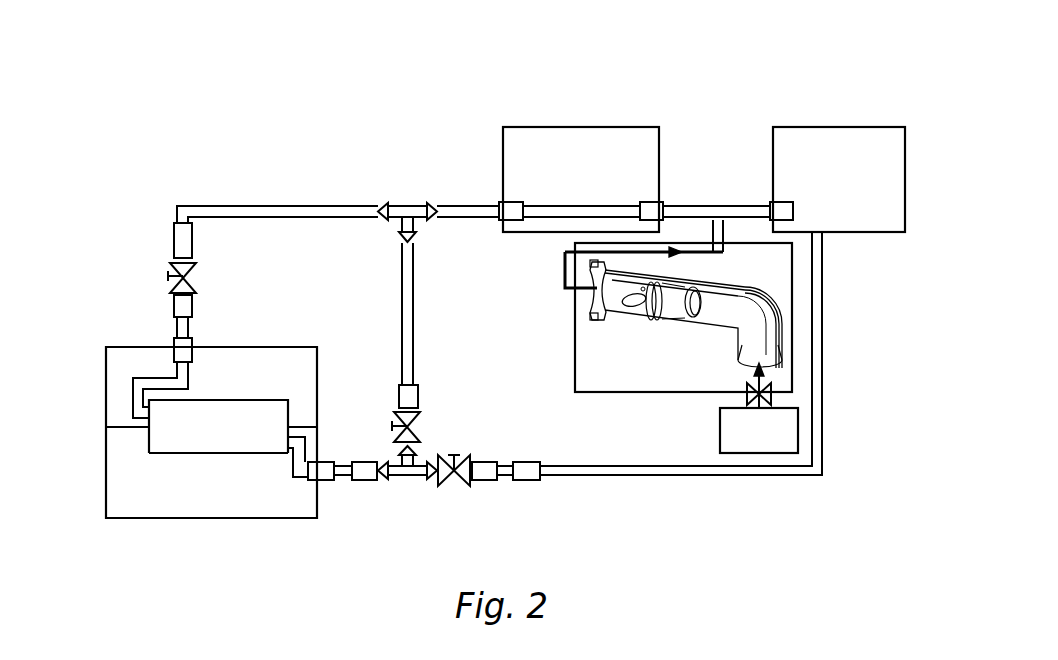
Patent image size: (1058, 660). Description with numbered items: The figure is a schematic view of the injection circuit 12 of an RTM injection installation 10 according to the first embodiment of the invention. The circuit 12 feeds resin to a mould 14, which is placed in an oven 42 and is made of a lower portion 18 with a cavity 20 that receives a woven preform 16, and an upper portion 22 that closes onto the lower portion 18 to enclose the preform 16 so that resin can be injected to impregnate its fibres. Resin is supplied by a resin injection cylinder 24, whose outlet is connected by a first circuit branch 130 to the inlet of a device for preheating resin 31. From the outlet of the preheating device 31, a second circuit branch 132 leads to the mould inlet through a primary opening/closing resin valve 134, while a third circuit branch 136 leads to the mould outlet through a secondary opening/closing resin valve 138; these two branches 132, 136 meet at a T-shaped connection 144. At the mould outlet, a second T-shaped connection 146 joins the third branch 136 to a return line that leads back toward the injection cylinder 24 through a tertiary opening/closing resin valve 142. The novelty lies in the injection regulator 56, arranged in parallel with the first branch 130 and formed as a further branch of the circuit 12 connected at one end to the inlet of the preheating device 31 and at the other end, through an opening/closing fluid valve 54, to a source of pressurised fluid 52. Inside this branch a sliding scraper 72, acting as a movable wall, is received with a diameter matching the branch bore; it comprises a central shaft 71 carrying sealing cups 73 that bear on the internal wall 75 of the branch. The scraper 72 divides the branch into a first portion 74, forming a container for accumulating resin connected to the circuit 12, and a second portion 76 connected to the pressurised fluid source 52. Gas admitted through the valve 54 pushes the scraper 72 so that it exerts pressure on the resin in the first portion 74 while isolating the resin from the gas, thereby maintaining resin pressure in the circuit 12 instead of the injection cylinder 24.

The RTM injection installation 10 is at (795, 70).
The injection circuit 12 is at (282, 160).
The mould 14 is at (285, 492).
The woven preform 16 is at (170, 437).
The lower portion 18 is at (228, 502).
The cavity 20 is at (183, 455).
The upper portion 22 is at (255, 375).
The resin injection cylinder 24 is at (839, 179).
The device for preheating resin 31 is at (581, 179).
The oven 42 is at (106, 380).
The source of pressurised fluid 52 is at (759, 430).
The opening/closing fluid valve 54 is at (772, 398).
The injection regulator 56 is at (773, 292).
The central shaft 71 is at (676, 302).
The sliding scraper 72 is at (681, 329).
The sealing cups 73 is at (660, 317).
The first portion 74 is at (620, 275).
The internal wall 75 is at (755, 355).
The second portion 76 is at (770, 338).
The first circuit branch 130 is at (715, 210).
The second circuit branch 132 is at (232, 213).
The primary opening/closing resin valve 134 is at (182, 283).
The third circuit branch 136 is at (408, 300).
The secondary opening/closing resin valve 138 is at (408, 437).
The tertiary opening/closing resin valve 142 is at (465, 483).
The T-shaped connection 144 is at (408, 210).
The T-shaped connection 146 is at (410, 467).